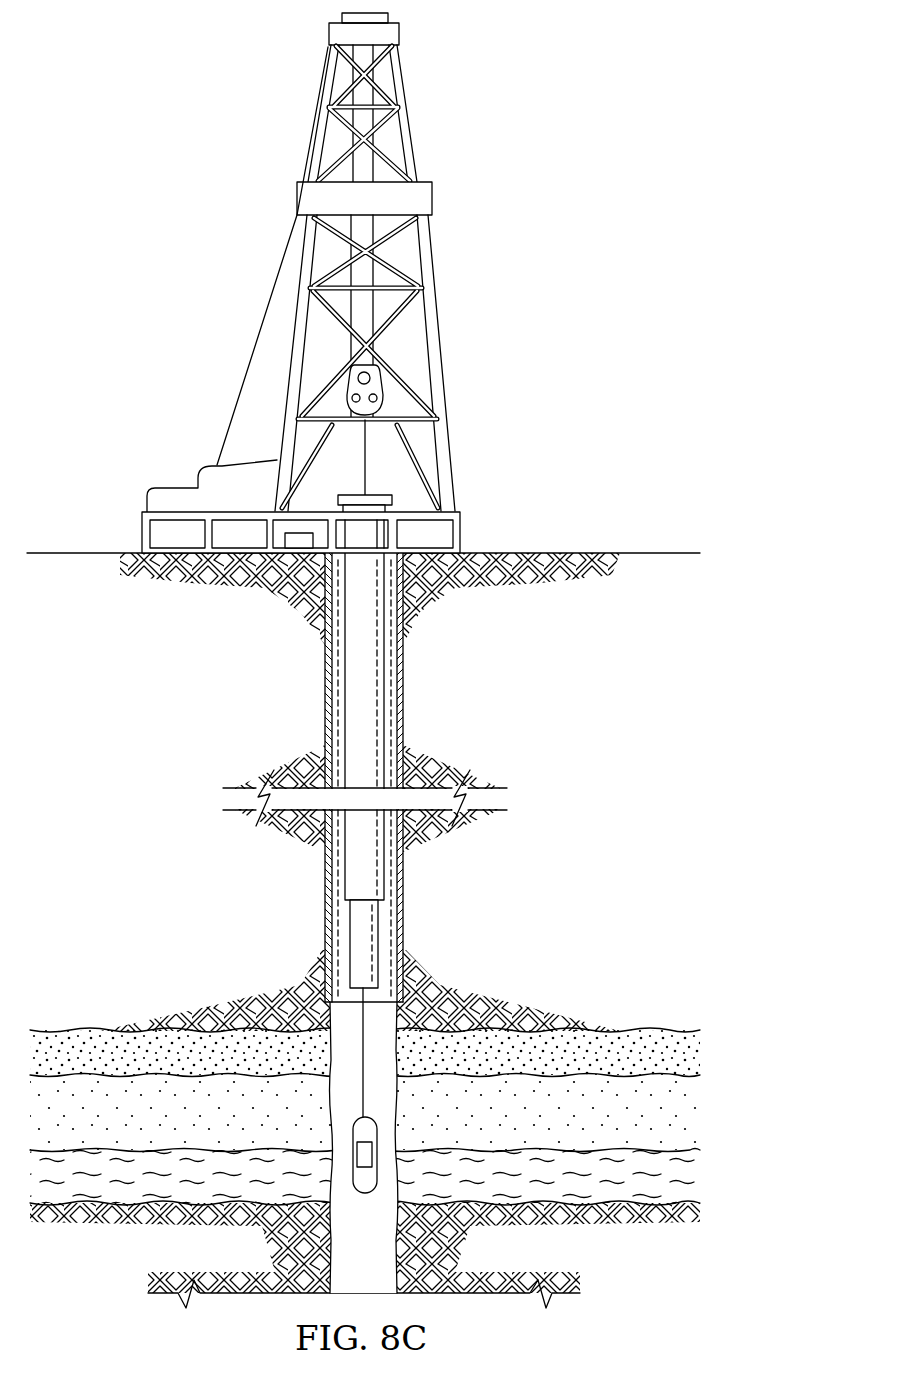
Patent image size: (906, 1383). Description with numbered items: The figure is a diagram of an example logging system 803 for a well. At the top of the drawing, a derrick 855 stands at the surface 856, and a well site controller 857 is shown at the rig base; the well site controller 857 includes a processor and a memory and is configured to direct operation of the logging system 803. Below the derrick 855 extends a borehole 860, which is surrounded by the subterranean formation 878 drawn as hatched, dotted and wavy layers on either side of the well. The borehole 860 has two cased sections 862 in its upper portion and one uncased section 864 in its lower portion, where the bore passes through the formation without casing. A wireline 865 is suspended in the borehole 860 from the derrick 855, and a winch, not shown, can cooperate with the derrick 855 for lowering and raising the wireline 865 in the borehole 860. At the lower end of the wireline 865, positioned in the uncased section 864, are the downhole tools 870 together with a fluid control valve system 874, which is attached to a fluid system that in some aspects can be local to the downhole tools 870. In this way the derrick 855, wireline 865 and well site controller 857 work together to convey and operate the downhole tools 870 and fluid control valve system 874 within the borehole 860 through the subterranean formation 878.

The logging system 803 is at (205, 135).
The derrick 855 is at (440, 363).
The surface 856 is at (490, 556).
The well site controller 857 is at (300, 548).
The borehole 860 is at (325, 927).
The cased section 862 is at (387, 852).
The uncased section 864 is at (343, 1247).
The wireline 865 is at (368, 1020).
The downhole tools 870 is at (377, 1120).
The fluid control valve system 874 is at (355, 1152).
The subterranean formation 878 is at (709, 1126).